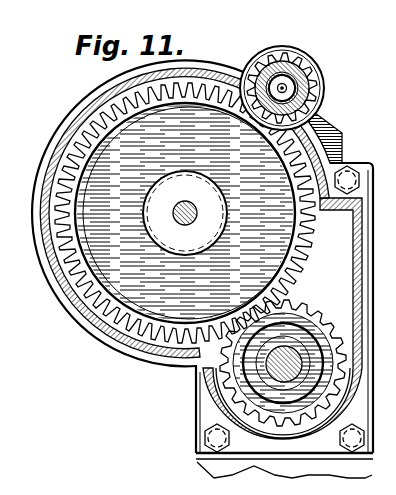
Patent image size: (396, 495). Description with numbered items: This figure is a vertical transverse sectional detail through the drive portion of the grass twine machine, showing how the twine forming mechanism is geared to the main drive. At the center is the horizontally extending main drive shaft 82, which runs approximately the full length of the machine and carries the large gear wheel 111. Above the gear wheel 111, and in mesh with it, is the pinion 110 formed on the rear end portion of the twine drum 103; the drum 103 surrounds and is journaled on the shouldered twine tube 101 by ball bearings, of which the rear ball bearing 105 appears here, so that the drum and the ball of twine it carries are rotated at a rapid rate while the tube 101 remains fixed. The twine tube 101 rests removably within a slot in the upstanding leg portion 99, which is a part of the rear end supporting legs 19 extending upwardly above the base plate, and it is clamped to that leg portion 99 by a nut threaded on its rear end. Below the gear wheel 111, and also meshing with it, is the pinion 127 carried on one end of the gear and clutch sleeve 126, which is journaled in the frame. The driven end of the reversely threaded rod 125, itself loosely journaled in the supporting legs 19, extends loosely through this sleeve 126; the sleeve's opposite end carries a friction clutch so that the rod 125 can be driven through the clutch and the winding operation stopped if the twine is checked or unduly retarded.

The rear end supporting legs 19 is at (291, 469).
The main drive shaft 82 is at (190, 226).
The upstanding leg portion 99 is at (197, 408).
The shouldered twine tube 101 is at (295, 89).
The twine drum 103 is at (262, 58).
The rear ball bearing 105 is at (323, 76).
The pinion 110 is at (309, 62).
The gear wheel 111 is at (72, 306).
The reversely threaded rod 125 is at (290, 352).
The gear and clutch sleeve 126 is at (308, 360).
The pinion 127 is at (197, 383).